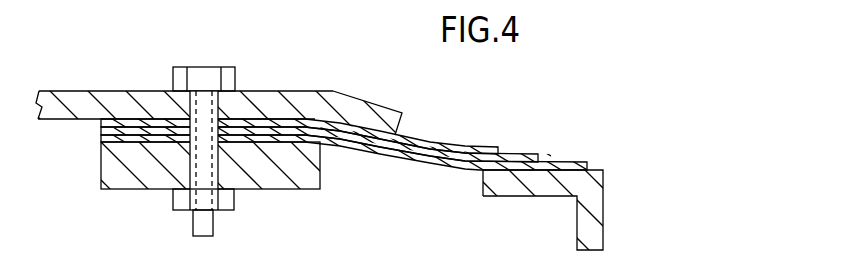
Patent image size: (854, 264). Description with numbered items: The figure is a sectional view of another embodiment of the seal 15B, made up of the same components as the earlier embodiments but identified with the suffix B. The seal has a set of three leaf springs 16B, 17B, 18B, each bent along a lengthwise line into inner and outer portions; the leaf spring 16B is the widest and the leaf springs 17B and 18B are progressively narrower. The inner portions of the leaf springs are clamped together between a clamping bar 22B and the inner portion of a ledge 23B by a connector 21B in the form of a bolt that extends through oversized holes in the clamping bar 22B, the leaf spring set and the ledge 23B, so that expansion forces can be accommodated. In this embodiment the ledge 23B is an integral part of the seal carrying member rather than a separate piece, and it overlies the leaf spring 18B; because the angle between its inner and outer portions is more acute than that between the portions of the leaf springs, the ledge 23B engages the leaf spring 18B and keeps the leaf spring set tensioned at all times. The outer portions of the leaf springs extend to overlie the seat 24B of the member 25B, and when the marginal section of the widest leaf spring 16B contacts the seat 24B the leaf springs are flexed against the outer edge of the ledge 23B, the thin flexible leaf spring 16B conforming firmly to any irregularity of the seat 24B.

The seal 15B is at (145, 86).
The connector 21B is at (228, 67).
The ledge 23B is at (392, 110).
The clamping bar 22B is at (101, 160).
The leaf spring 18B is at (488, 147).
The leaf spring 17B is at (538, 154).
The leaf spring 16B is at (587, 162).
The seat 24B is at (603, 170).
The member 25B is at (604, 203).